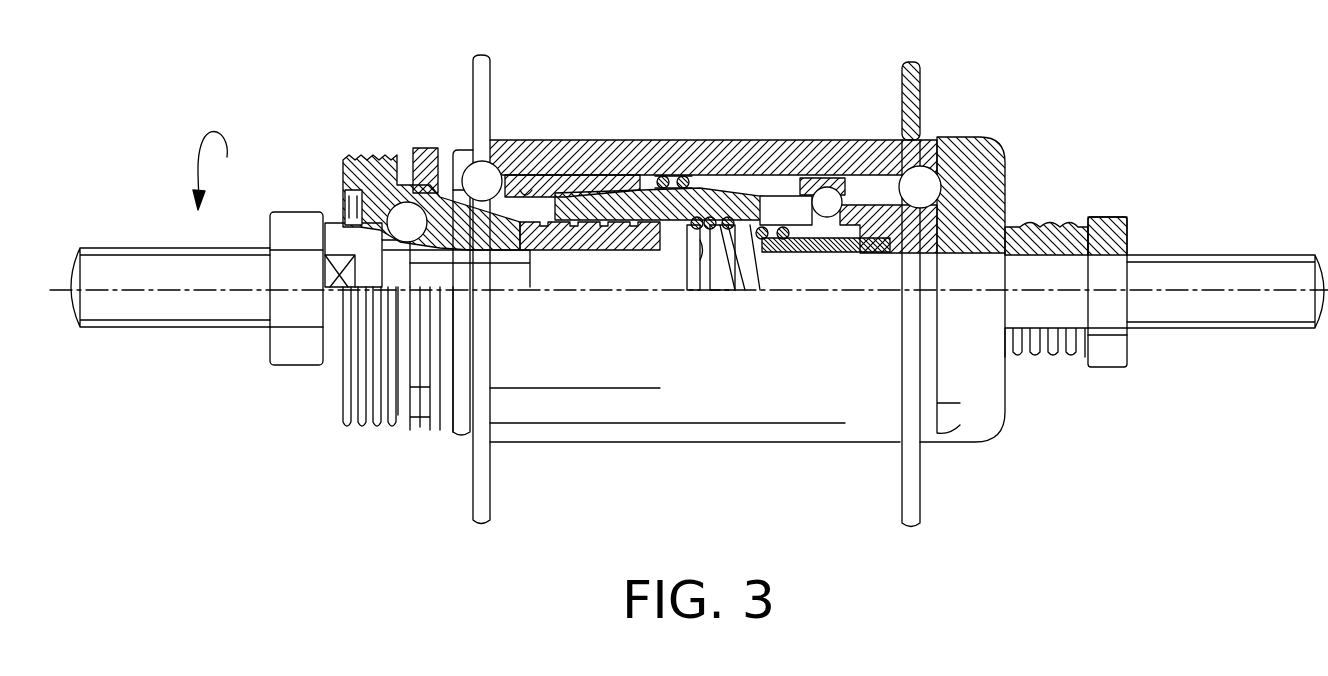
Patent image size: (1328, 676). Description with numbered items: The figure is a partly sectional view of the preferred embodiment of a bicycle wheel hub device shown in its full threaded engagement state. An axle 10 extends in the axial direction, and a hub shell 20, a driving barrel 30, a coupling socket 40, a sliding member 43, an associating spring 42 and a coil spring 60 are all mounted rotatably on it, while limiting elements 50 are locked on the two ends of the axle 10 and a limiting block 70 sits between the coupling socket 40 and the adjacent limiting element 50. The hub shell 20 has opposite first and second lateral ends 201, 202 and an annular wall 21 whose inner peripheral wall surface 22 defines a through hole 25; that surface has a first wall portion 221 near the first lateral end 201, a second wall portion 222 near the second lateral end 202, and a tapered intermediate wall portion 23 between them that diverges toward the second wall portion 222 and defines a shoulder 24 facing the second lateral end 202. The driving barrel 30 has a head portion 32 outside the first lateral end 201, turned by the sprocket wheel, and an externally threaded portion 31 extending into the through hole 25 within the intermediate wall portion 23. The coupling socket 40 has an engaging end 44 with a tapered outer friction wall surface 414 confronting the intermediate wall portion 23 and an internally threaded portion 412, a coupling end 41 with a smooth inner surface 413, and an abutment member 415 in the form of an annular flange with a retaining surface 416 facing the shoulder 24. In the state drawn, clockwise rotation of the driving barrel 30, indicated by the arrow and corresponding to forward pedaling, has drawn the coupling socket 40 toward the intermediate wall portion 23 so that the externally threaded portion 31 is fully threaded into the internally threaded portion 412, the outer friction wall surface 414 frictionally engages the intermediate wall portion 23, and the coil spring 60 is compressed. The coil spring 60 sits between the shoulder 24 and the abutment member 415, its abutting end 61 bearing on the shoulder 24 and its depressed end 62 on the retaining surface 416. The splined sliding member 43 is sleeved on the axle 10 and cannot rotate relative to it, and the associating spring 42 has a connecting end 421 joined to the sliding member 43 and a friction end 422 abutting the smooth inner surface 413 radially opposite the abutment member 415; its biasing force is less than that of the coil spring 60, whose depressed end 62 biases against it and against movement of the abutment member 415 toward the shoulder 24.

The axle 10 is at (122, 247).
The hub shell 20 is at (502, 140).
The first lateral end 201 is at (457, 147).
The second lateral end 202 is at (927, 150).
The annular wall 21 is at (830, 182).
The inner peripheral wall surface 22 is at (852, 198).
The first wall portion 221 is at (528, 196).
The second wall portion 222 is at (870, 180).
The tapered intermediate wall portion 23 is at (614, 185).
The shoulder 24 is at (650, 180).
The through hole 25 is at (922, 164).
The driving barrel 30 is at (363, 152).
The externally threaded portion 31 is at (613, 230).
The head portion 32 is at (386, 156).
The coupling socket 40 is at (745, 205).
The coupling end 41 is at (754, 205).
The internally threaded portion 412 is at (590, 236).
The smooth inner surface 413 is at (746, 240).
The tapered outer friction wall surface 414 is at (540, 192).
The abutment member 415 is at (740, 188).
The retaining surface 416 is at (712, 188).
The associating spring 42 is at (717, 292).
The connecting end 421 is at (795, 240).
The friction end 422 is at (688, 230).
The sliding member 43 is at (803, 258).
The engaging end 44 is at (565, 252).
The limiting elements 50 is at (333, 220).
The coil spring 60 is at (682, 172).
The abutting end 61 is at (660, 175).
The depressed end 62 is at (688, 175).
The limiting block 70 is at (834, 185).